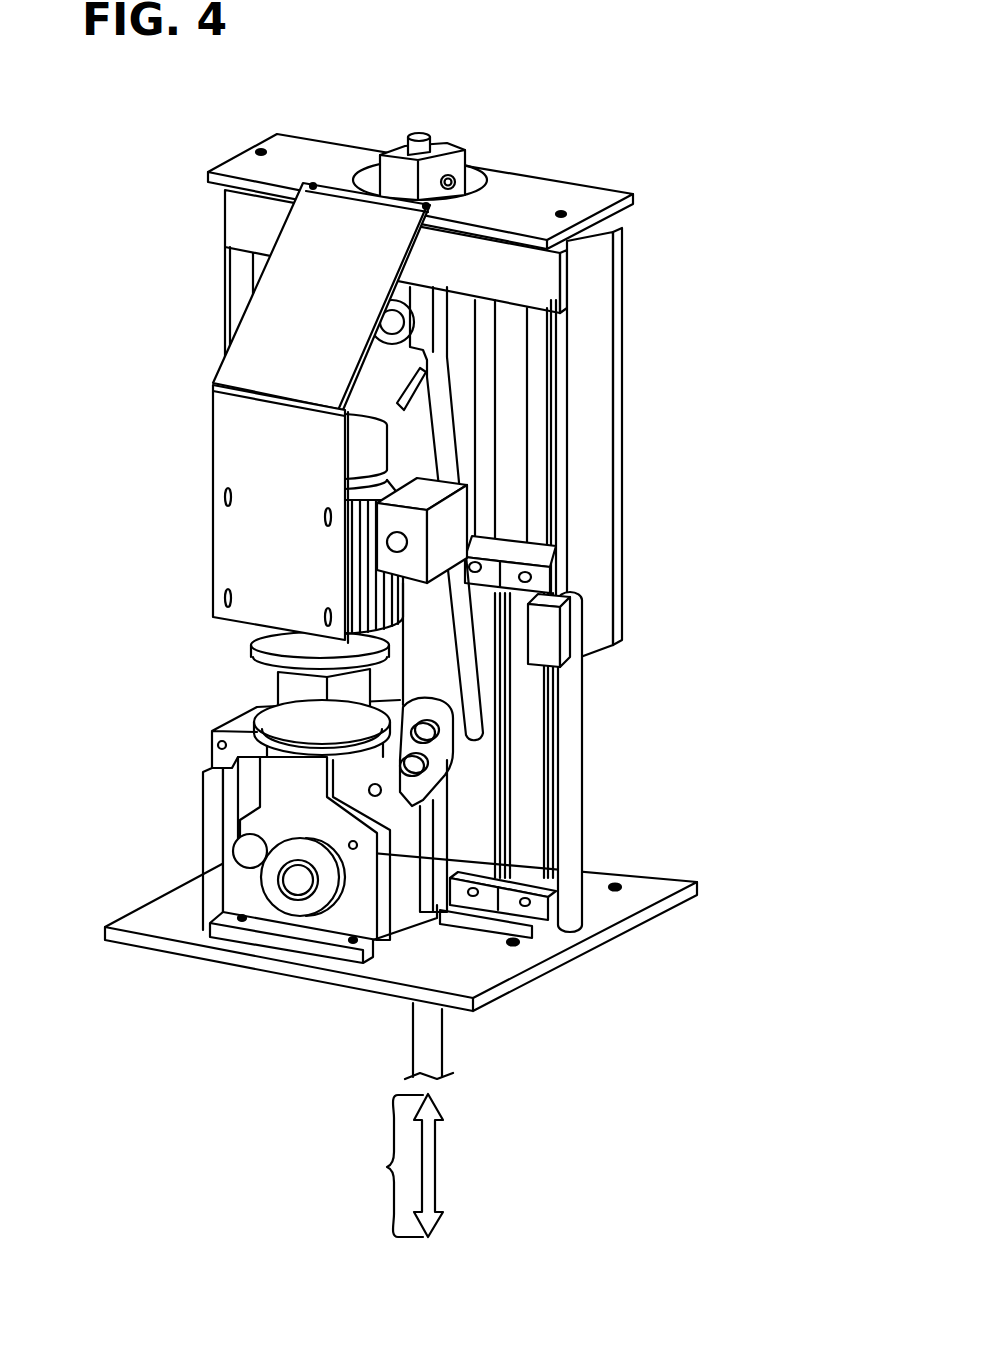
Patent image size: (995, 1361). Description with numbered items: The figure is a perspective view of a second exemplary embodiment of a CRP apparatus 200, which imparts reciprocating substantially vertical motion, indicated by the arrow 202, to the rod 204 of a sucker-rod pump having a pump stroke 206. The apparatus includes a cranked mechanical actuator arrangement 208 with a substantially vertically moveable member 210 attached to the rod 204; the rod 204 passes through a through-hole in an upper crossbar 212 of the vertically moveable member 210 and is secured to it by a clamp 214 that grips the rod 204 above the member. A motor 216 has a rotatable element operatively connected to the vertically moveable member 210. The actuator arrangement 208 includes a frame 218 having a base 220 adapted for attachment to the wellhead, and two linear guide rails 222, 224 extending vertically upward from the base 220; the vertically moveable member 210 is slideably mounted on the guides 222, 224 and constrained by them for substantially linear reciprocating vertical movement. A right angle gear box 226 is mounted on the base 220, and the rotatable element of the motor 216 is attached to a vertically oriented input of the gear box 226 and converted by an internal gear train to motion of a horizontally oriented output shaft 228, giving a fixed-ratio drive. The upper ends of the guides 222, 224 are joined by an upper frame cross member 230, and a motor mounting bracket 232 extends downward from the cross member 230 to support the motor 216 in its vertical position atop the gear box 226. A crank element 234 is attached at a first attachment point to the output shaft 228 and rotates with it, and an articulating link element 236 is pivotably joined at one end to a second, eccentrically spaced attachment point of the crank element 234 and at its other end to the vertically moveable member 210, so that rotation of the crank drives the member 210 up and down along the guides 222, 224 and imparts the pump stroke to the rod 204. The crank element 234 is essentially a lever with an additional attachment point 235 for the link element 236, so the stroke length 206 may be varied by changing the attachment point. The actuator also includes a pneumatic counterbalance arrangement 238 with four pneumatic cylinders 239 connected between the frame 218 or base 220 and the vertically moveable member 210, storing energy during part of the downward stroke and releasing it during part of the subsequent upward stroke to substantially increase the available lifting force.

The CRP apparatus 200 is at (421, 654).
The arrow 202 is at (430, 1168).
The rod 204 is at (432, 1038).
The pump stroke 206 is at (387, 1167).
The cranked mechanical actuator arrangement 208 is at (238, 613).
The vertically moveable member 210 is at (606, 318).
The upper crossbar 212 is at (240, 206).
The clamp 214 is at (437, 145).
The motor 216 is at (363, 590).
The frame 218 is at (142, 920).
The base 220 is at (168, 945).
The linear guide rail 222 is at (262, 683).
The linear guide rail 224 is at (577, 717).
The right angle gear box 226 is at (208, 790).
The output shaft 228 is at (297, 887).
The upper frame cross member 230 is at (584, 192).
The motor mounting bracket 232 is at (262, 333).
The crank element 234 is at (415, 843).
The additional attachment point 235 is at (425, 795).
The articulating link element 236 is at (587, 599).
The pneumatic counterbalance arrangement 238 is at (537, 716).
The pneumatic cylinders 239 is at (473, 768).